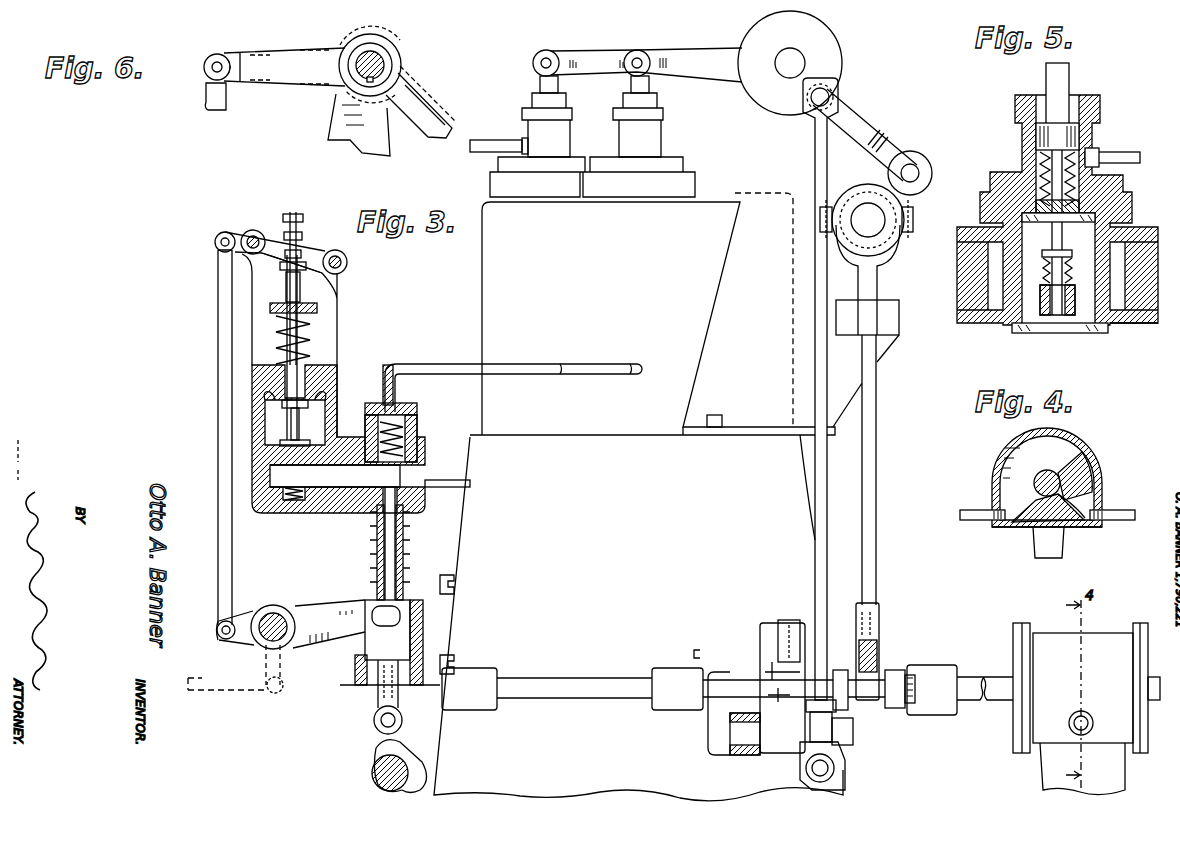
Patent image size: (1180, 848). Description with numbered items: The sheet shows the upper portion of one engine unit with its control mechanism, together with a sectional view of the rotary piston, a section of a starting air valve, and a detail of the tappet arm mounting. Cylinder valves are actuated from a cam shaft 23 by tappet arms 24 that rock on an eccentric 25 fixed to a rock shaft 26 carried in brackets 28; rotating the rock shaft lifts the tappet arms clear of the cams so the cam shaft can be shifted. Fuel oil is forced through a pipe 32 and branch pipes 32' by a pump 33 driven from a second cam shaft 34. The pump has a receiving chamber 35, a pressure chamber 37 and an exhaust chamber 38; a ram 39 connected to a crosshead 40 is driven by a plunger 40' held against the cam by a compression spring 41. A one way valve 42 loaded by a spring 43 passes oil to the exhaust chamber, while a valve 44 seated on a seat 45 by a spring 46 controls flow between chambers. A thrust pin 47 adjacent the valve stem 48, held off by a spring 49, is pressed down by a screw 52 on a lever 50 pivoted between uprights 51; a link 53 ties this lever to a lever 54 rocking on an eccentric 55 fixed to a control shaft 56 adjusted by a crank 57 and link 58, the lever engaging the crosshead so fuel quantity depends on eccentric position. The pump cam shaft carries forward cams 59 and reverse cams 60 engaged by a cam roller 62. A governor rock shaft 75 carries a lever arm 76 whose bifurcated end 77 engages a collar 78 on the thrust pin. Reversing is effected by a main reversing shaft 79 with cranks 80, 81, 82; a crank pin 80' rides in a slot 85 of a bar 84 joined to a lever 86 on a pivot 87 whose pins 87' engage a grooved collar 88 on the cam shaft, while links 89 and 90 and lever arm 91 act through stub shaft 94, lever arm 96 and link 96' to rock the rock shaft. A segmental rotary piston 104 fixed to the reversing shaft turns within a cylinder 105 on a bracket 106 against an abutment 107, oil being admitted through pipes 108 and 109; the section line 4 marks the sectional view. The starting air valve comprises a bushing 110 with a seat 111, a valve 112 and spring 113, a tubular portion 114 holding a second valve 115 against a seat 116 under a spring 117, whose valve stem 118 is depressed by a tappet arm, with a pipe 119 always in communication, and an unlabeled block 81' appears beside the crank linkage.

In FIG. 3, the cam shaft 23 is at (880, 224).
In FIG. 6, the tappet arm 24 is at (284, 64).
In FIG. 3, the tappet arm 24 is at (597, 58).
In FIG. 6, the eccentric 25 is at (383, 60).
In FIG. 6, the rock shaft 26 is at (386, 66).
In FIG. 3, the rock shaft 26 is at (820, 54).
In FIG. 6, the supporting bracket 28 is at (366, 131).
In FIG. 3, the supporting bracket 28 is at (720, 292).
In FIG. 3, the pipe 32 is at (511, 371).
In FIG. 3, the branch pipe 32' is at (587, 386).
In FIG. 3, the pump 33 is at (258, 496).
In FIG. 3, the cam shaft 34 is at (371, 775).
In FIG. 3, the oil receiving chamber 35 is at (322, 406).
In FIG. 3, the pressure chamber 37 is at (332, 480).
In FIG. 3, the exhaust chamber 38 is at (418, 409).
In FIG. 3, the ram 39 is at (378, 541).
In FIG. 3, the crosshead 40 is at (390, 642).
In FIG. 3, the plunger 40' is at (367, 688).
In FIG. 3, the compression spring 41 is at (378, 563).
In FIG. 3, the one way valve 42 is at (421, 471).
In FIG. 3, the compression spring 43 is at (418, 437).
In FIG. 3, the valve 44 is at (286, 466).
In FIG. 3, the valve seat 45 is at (282, 446).
In FIG. 3, the compression spring 46 is at (288, 506).
In FIG. 3, the thrust pin 47 is at (300, 353).
In FIG. 3, the valve stem 48 is at (272, 431).
In FIG. 3, the spring 49 is at (318, 320).
In FIG. 3, the lever 50 is at (272, 230).
In FIG. 3, the upright 51 is at (258, 306).
In FIG. 3, the adjustable screw 52 is at (298, 226).
In FIG. 3, the link 53 is at (217, 372).
In FIG. 3, the lever 54 is at (241, 643).
In FIG. 3, the eccentric 55 is at (268, 612).
In FIG. 3, the control shaft 56 is at (292, 648).
In FIG. 3, the crank 57 is at (288, 680).
In FIG. 3, the link 58 is at (218, 694).
In FIG. 3, the forward cam 59 is at (386, 749).
In FIG. 3, the reverse cam 60 is at (411, 750).
In FIG. 3, the cam roller 62 is at (373, 726).
In FIG. 3, the rock shaft 75 is at (347, 262).
In FIG. 3, the lever arm 76 is at (312, 258).
In FIG. 3, the bifurcated end 77 is at (280, 266).
In FIG. 3, the collar 78 is at (278, 265).
In FIG. 4, the main reversing shaft 79 is at (1044, 474).
In FIG. 3, the main reversing shaft 79 is at (590, 700).
In FIG. 3, the crank 80 is at (900, 673).
In FIG. 3, the crank pin 80' is at (873, 714).
In FIG. 3, the crank 81 is at (771, 677).
In FIG. 3, the block insert 81' is at (789, 624).
In FIG. 3, the crank 82 is at (706, 746).
In FIG. 3, the bar 84 is at (879, 652).
In FIG. 3, the slot 85 is at (880, 612).
In FIG. 3, the lever 86 is at (878, 472).
In FIG. 3, the horizontal pivot 87 is at (879, 331).
In FIG. 3, the pin 87' is at (884, 202).
In FIG. 3, the collar 88 is at (876, 258).
In FIG. 3, the link 89 is at (782, 675).
In FIG. 3, the link 90 is at (735, 753).
In FIG. 3, the lever arm 91 is at (770, 695).
In FIG. 3, the stub shaft 94 is at (851, 742).
In FIG. 3, the lever arm 96 is at (803, 751).
In FIG. 3, the link 96' is at (808, 395).
In FIG. 4, the rotary piston 104 is at (1094, 480).
In FIG. 4, the cylinder 105 is at (1088, 450).
In FIG. 3, the cylinder 105 is at (1086, 688).
In FIG. 4, the bracket 106 is at (1050, 555).
In FIG. 3, the bracket 106 is at (1040, 763).
In FIG. 4, the segmental abutment 107 is at (1030, 528).
In FIG. 4, the pipe 108 is at (1120, 521).
In FIG. 3, the pipe 108 is at (1088, 715).
In FIG. 4, the pipe 109 is at (976, 520).
In FIG. 5, the bushing 110 is at (1012, 265).
In FIG. 5, the valve seat 111 is at (1118, 326).
In FIG. 5, the valve 112 is at (1048, 332).
In FIG. 5, the spring 113 is at (1044, 282).
In FIG. 5, the tubular portion 114 is at (1026, 148).
In FIG. 3, the tubular portion 114 is at (556, 134).
In FIG. 5, the second valve 115 is at (1056, 222).
In FIG. 5, the seat 116 is at (1086, 216).
In FIG. 5, the spring 117 is at (1076, 186).
In FIG. 6, the valve stem 118 is at (210, 98).
In FIG. 5, the valve stem 118 is at (1069, 90).
In FIG. 3, the valve stem 118 is at (540, 84).
In FIG. 5, the pipe 119 is at (1122, 152).
In FIG. 3, the pipe 119 is at (493, 150).
In FIG. 3, the section line 4 is at (1080, 688).